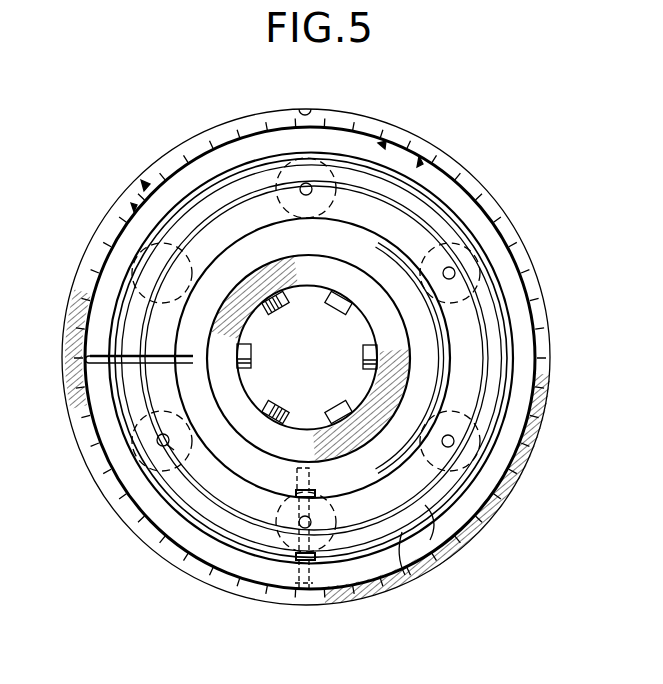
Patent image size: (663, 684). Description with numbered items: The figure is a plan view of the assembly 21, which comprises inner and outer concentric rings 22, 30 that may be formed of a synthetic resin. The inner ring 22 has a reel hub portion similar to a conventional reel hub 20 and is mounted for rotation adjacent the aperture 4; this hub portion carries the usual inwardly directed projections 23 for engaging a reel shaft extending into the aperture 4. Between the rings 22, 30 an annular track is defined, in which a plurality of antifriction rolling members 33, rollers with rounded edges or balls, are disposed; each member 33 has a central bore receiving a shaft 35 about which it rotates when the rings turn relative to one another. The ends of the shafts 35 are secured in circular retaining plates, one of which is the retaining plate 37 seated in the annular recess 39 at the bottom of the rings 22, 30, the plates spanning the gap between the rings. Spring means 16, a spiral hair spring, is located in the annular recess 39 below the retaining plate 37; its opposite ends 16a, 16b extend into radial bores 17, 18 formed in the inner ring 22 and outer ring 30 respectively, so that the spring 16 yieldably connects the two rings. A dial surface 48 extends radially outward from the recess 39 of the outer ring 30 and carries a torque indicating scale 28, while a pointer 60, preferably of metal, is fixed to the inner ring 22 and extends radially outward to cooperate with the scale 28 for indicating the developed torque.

The aperture 4 is at (243, 376).
The spring means 16 is at (413, 205).
The spring end 16a is at (318, 496).
The spring end 16b is at (286, 592).
The radial bore 17 is at (288, 468).
The radial bore 18 is at (316, 592).
The reel hub 20 is at (387, 331).
The assembly 21 is at (521, 219).
The inner ring 22 is at (387, 398).
The inwardly directed projections 23 is at (242, 372).
The torque indicating scale 28 is at (131, 233).
The outer ring 30 is at (134, 523).
The antifriction rolling members 33 is at (120, 413).
The shaft 35 is at (167, 266).
The retaining plate 37 is at (430, 507).
The annular recess 39 is at (402, 532).
The dial surface 48 is at (530, 394).
The pointer 60 is at (85, 360).